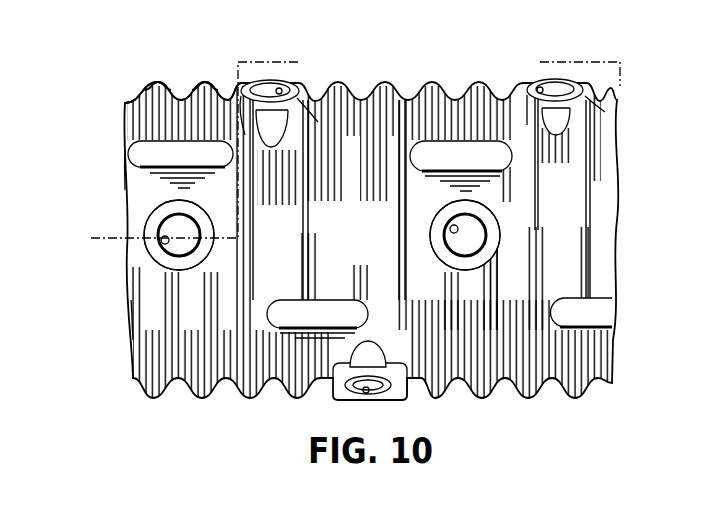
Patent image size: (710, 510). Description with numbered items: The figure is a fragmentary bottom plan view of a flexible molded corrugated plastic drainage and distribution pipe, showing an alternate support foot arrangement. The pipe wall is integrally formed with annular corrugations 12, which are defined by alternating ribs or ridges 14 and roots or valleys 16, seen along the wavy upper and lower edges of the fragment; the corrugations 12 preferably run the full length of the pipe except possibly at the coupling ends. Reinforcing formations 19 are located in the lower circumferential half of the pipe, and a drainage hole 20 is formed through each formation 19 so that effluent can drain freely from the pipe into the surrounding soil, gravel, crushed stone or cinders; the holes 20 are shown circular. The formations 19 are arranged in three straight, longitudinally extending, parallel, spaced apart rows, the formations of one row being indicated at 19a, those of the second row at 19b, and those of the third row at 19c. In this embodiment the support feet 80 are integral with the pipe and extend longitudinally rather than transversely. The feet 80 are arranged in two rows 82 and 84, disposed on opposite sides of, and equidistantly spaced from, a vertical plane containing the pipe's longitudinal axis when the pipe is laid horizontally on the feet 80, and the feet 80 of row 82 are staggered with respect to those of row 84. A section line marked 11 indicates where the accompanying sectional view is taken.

The section line 11- 11 is at (91, 264).
The annular corrugations 12 is at (407, 78).
The ribs or ridges 14 is at (193, 80).
The roots or valleys 16 is at (179, 99).
The reinforcing formation 19 is at (245, 105).
The reinforcing formations of first row 19a is at (318, 122).
The reinforcing formations of second row 19b is at (208, 256).
The reinforcing formations of third row 19c is at (412, 378).
The drainage hole 20 is at (281, 90).
The support feet 80 is at (140, 153).
The first row of feet 82 is at (118, 168).
The second row of feet 84 is at (133, 320).